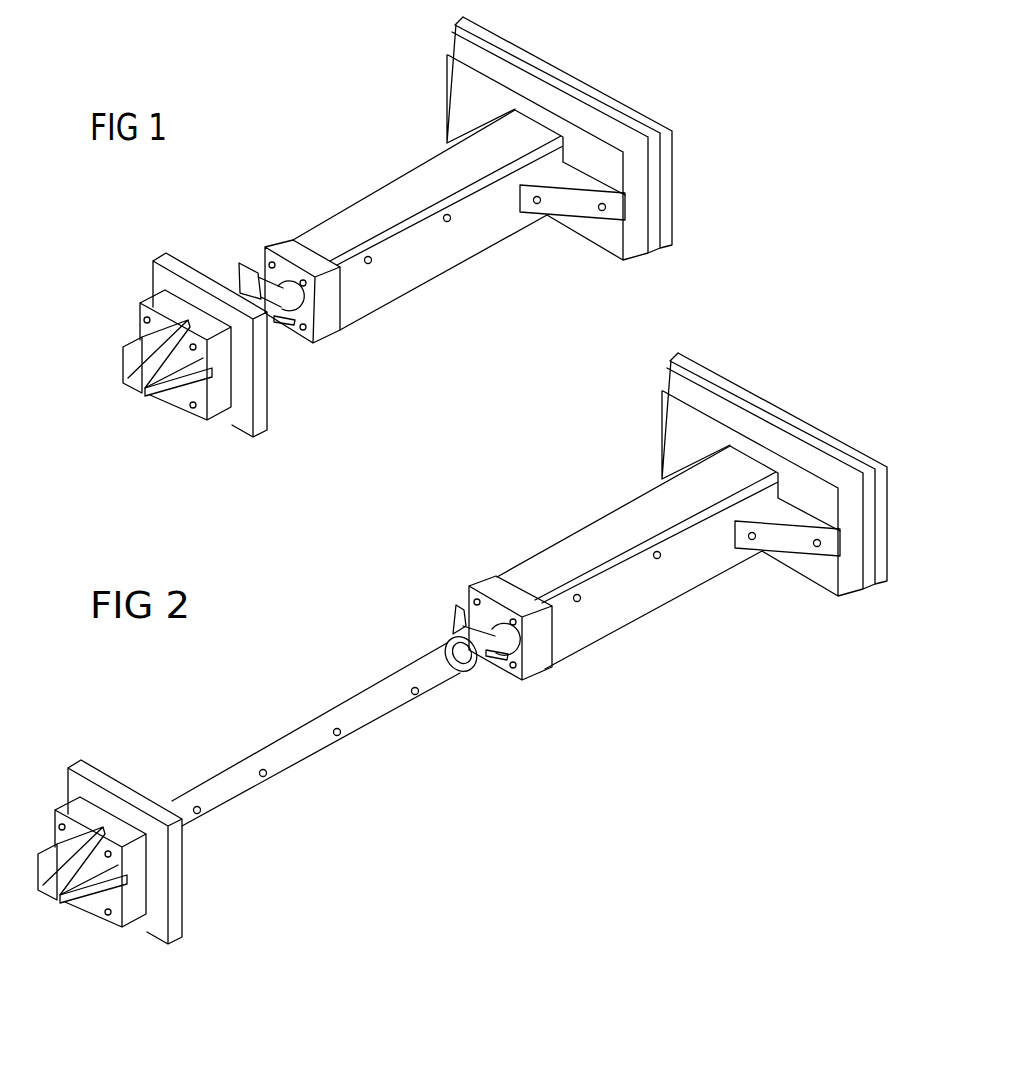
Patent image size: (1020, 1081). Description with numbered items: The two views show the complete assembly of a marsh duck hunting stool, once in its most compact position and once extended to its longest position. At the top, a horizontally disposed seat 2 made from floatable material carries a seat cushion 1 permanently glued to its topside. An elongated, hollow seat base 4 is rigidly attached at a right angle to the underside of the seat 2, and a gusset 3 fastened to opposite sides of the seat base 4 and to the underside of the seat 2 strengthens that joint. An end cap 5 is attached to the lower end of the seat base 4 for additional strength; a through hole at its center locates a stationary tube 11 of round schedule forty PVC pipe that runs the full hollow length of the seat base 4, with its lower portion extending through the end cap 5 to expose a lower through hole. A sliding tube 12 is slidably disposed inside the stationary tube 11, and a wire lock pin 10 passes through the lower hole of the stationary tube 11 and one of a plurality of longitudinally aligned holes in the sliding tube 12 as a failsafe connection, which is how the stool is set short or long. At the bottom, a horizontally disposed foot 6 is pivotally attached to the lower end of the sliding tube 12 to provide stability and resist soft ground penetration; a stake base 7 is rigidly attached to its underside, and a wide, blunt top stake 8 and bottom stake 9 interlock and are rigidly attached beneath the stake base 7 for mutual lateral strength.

In FIG. 1, the seat cushion 1 is at (543, 55).
In FIG. 2, the seat 2 is at (858, 596).
In FIG. 2, the gusset 3 is at (662, 438).
In FIG. 1, the seat base 4 is at (397, 177).
In FIG. 1, the end cap 5 is at (332, 335).
In FIG. 1, the foot 6 is at (270, 408).
In FIG. 1, the stake base 7 is at (140, 320).
In FIG. 1, the top stake 8 is at (123, 373).
In FIG. 1, the bottom stake 9 is at (162, 408).
In FIG. 2, the wire lock pin 10 is at (455, 619).
In FIG. 2, the stationary tube 11 is at (480, 663).
In FIG. 2, the sliding tube 12 is at (303, 758).